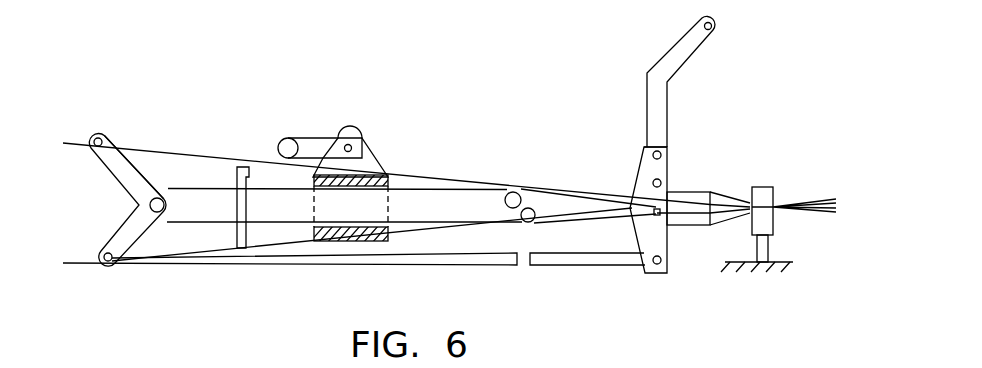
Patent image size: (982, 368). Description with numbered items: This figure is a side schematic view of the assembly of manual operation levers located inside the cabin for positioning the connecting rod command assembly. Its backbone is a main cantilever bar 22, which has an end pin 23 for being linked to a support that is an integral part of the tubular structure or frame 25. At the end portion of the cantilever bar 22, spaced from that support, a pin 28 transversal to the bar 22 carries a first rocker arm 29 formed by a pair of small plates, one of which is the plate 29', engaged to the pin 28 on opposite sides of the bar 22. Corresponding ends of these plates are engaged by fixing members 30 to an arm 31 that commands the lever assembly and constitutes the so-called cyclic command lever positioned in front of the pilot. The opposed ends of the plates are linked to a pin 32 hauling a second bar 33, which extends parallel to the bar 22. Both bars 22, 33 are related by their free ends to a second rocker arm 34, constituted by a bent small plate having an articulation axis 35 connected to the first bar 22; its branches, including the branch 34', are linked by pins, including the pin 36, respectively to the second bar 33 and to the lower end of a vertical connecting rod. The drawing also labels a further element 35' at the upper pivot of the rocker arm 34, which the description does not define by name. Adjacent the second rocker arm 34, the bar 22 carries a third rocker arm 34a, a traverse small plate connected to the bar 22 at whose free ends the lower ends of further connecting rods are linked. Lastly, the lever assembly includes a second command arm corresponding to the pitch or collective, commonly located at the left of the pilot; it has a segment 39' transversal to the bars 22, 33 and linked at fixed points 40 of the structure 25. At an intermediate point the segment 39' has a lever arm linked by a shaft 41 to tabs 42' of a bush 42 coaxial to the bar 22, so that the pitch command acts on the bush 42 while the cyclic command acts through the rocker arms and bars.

The main cantilever bar 22 is at (534, 200).
The end pin 23 is at (773, 195).
The tubular structure or frame 25 is at (780, 262).
The pin 28 is at (663, 209).
The first rocker arm 29 is at (632, 138).
The small plate 29' is at (688, 131).
The fixing members 30 is at (654, 157).
The arm 31 is at (684, 37).
The pin 32 is at (663, 264).
The second bar 33 is at (427, 258).
The second rocker arm 34 is at (426, 167).
The branch of second rocker arm 34' is at (372, 250).
The third rocker arm 34a is at (250, 167).
The articulation axis 35 is at (189, 171).
The rod 35' is at (386, 148).
The pin 36 is at (108, 262).
The segment 39' is at (308, 119).
The fixed points 40 is at (368, 163).
The shaft 41 is at (353, 148).
The bush 42 is at (348, 257).
The tabs 42' is at (379, 190).